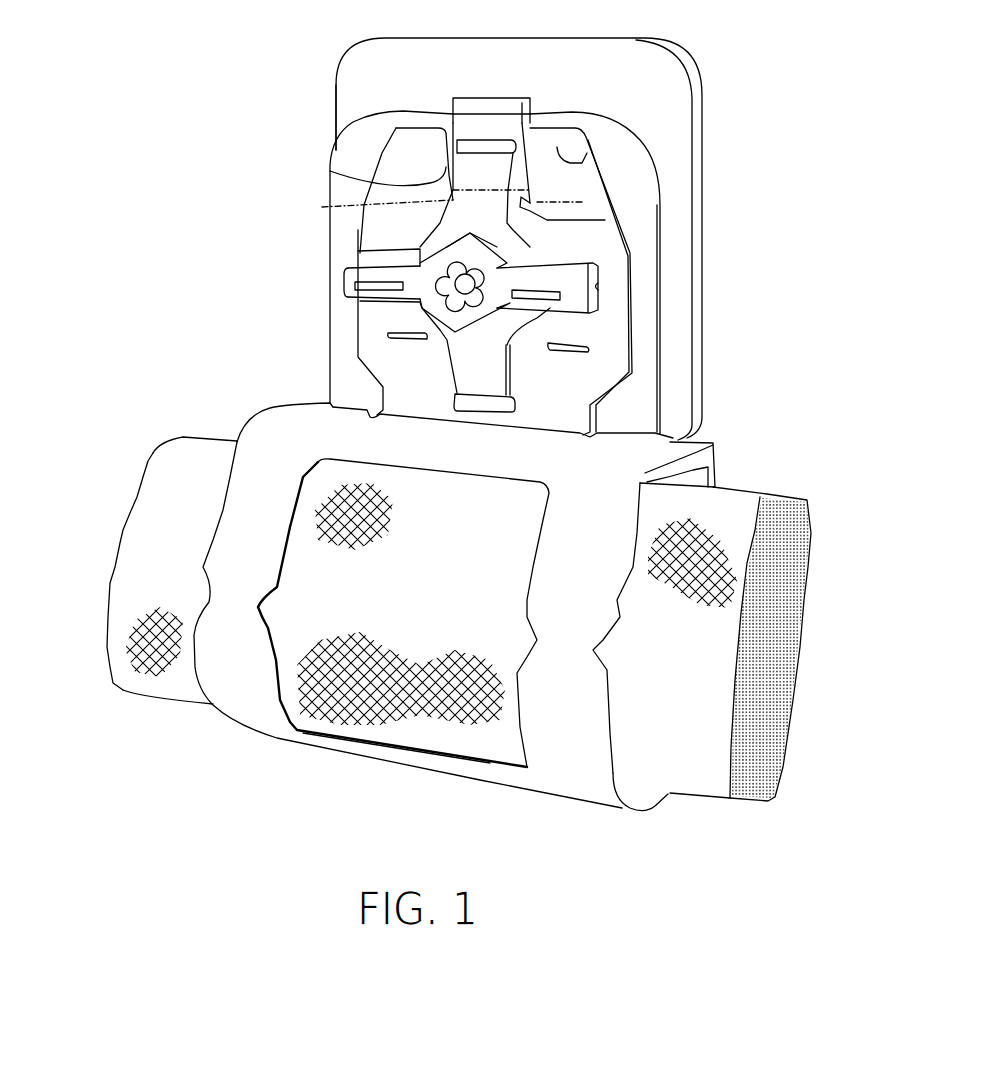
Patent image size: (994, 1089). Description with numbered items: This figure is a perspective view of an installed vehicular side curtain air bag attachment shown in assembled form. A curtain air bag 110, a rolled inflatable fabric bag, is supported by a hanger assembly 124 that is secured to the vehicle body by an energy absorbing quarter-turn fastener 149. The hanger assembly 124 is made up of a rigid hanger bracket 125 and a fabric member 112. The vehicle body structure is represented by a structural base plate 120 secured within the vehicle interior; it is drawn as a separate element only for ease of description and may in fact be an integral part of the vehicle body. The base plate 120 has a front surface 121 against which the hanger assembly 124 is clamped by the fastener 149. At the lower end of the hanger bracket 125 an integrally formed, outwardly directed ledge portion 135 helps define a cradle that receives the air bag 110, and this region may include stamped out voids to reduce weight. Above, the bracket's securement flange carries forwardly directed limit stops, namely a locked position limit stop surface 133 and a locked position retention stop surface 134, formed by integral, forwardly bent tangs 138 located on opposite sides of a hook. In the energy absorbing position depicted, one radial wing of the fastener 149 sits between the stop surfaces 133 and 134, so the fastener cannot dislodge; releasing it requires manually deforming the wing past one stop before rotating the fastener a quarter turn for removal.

The curtain air bag 110 is at (142, 521).
The fabric member 112 is at (343, 128).
The base plate 120 is at (707, 305).
The front surface 121 is at (685, 235).
The hanger assembly 124 is at (313, 363).
The hanger bracket 125 is at (363, 208).
The locked position limit stop surface 133 is at (605, 220).
The locked position retention stop surface 134 is at (330, 171).
The ledge portion 135 is at (670, 453).
The tangs 138 is at (400, 147).
The energy absorbing quarter-turn fastener 149 is at (347, 282).